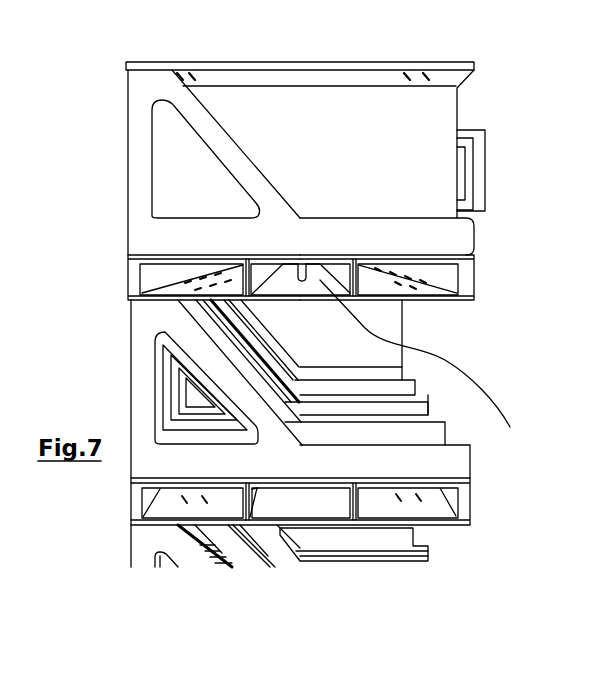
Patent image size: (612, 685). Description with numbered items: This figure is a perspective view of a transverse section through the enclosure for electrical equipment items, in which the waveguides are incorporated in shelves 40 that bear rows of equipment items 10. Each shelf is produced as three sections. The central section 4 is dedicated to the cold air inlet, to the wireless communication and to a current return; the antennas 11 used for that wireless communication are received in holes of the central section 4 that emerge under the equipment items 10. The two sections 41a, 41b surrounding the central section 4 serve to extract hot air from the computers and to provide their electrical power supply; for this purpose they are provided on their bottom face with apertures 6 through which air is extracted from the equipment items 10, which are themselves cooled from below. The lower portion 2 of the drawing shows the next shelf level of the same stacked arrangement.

The equipment items 10 is at (382, 107).
The apertures 6 is at (188, 290).
The section 41a is at (131, 283).
The section 41b is at (468, 275).
The antennas 11 is at (318, 272).
The shelves 40 is at (467, 325).
The central section 4 is at (357, 588).
The lower module 2 is at (315, 575).